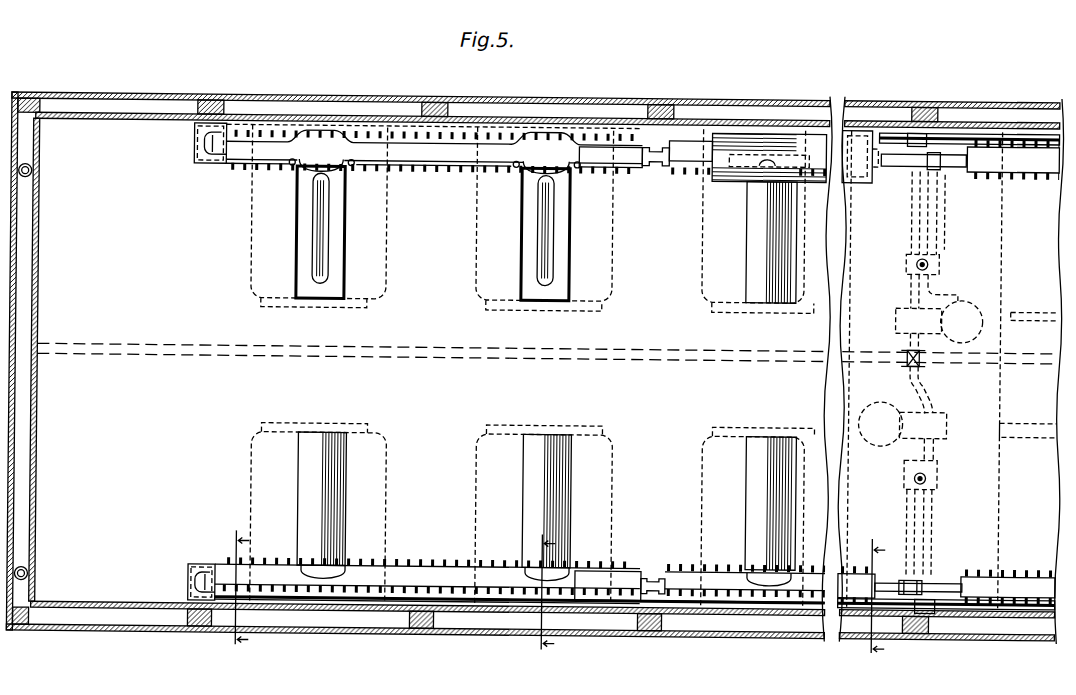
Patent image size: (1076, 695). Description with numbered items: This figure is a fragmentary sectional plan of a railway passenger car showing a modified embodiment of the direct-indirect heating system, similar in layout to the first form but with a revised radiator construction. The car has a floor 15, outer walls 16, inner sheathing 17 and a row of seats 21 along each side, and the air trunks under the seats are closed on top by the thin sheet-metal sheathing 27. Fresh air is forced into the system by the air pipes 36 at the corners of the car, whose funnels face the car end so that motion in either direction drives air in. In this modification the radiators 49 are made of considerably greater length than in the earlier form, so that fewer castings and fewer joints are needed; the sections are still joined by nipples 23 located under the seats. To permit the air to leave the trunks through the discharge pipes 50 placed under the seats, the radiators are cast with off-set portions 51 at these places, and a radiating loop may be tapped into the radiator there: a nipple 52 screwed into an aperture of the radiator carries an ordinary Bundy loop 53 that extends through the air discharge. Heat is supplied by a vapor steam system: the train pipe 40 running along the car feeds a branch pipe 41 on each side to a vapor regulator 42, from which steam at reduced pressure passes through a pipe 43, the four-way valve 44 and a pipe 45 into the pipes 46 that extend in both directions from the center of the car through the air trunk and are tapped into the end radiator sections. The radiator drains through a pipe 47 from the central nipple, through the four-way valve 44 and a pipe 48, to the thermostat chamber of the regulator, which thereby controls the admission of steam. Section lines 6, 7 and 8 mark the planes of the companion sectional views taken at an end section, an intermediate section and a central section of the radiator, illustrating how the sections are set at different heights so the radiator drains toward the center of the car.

The section line 6- 6 is at (238, 592).
The section line 7- 7 is at (542, 600).
The section line 8- 8 is at (873, 603).
The floor 15 is at (432, 322).
The outer walls 16 is at (545, 99).
The inner sheathing 17 is at (627, 120).
The seats 21 is at (722, 276).
The nipples 23 is at (663, 160).
The sheathing 27 is at (731, 152).
The air pipes 36 is at (30, 146).
The train pipe 40 is at (592, 353).
The branch pipe 41 is at (914, 333).
The vapor regulator 42 is at (979, 313).
The pipe 43 is at (913, 286).
The four-way valve 44 is at (945, 257).
The pipe 45 is at (912, 204).
The pipes 46 is at (218, 146).
The pipe 47 is at (944, 214).
The pipe 48 is at (965, 286).
The radiators 49 is at (443, 152).
The discharge pipes 50 is at (300, 232).
The off-set portions 51 is at (313, 130).
The nipple 52 is at (296, 168).
The Bundy loop 53 is at (318, 248).